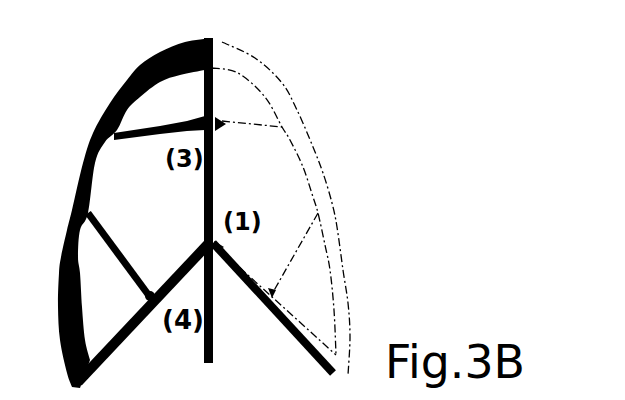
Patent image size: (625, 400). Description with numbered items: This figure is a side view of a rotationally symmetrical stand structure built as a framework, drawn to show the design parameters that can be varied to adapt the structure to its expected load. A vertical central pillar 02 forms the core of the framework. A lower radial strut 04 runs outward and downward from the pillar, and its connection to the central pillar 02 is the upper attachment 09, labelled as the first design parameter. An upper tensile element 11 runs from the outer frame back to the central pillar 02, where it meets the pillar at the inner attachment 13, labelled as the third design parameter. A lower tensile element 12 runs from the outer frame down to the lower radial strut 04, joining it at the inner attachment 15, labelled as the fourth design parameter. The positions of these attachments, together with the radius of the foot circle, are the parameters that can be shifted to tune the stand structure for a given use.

The central pillar 02 is at (205, 193).
The inner attachment 13 is at (185, 129).
The lower tensile element 12 is at (137, 266).
The inner attachment 15 is at (146, 293).
The lower radial strut 04 is at (248, 287).
The upper attachment 09 is at (218, 244).
The upper tensile element 11 is at (261, 131).